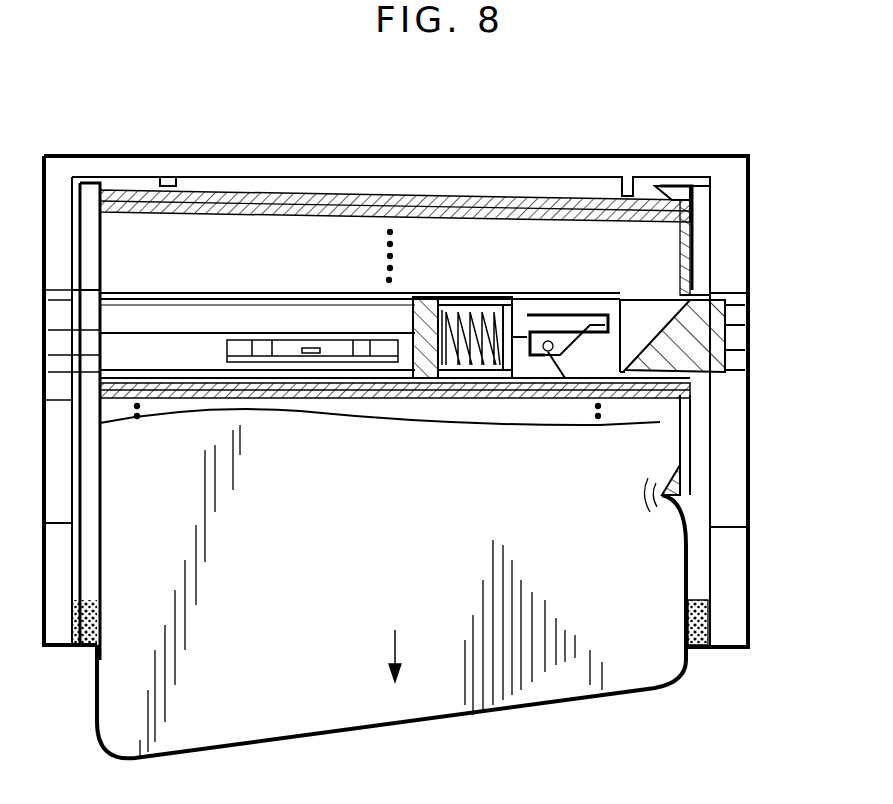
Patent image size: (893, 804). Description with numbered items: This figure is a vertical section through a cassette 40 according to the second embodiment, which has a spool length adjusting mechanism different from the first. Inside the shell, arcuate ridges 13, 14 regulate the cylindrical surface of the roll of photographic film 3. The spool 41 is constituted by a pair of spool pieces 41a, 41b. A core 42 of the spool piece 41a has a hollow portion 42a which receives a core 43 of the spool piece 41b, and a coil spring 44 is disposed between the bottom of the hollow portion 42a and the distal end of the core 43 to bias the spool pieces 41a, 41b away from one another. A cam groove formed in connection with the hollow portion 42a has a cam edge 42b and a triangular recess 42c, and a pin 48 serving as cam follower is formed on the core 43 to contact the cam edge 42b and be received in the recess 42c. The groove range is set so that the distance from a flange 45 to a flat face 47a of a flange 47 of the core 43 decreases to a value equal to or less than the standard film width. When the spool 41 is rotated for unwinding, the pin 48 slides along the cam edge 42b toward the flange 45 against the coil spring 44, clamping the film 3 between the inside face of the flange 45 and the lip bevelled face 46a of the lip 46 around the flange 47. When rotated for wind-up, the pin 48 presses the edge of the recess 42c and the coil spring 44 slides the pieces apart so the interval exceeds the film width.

The photographic film 3 is at (535, 708).
The arcuate ridge 13 is at (170, 183).
The arcuate ridge 14 is at (603, 185).
The cassette 40 is at (357, 140).
The spool 41 is at (755, 333).
The spool piece 41a is at (155, 280).
The spool piece 41b is at (664, 290).
The core 42 is at (252, 292).
The hollow portion 42a is at (448, 297).
The cam edge 42b is at (565, 360).
The triangular recess 42c is at (515, 370).
The core 43 is at (664, 398).
The coil spring 44 is at (447, 378).
The flange 45 is at (86, 183).
The lip 46 is at (672, 205).
The lip bevelled face 46a is at (660, 196).
The flange 47 is at (690, 255).
The flat face 47a is at (680, 240).
The pin 48 is at (562, 385).